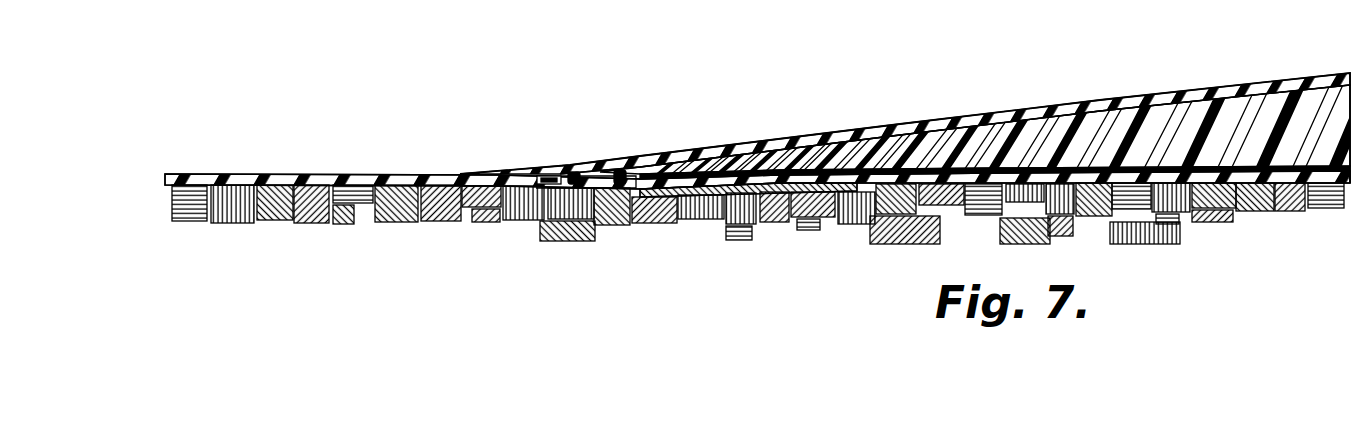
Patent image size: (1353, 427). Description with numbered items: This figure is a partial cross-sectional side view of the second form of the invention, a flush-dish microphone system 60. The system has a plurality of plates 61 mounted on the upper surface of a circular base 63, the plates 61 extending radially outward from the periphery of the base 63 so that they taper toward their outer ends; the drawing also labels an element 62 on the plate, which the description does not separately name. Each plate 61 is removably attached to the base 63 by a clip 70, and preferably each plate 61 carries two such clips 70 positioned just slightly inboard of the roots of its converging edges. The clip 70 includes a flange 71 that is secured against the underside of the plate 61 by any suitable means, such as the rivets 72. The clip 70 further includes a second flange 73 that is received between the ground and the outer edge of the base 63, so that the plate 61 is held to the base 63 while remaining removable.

The flush-dish microphone system 60 is at (906, 102).
The plate 61 is at (878, 130).
The top skin layer 62 is at (1150, 104).
The circular base 63 is at (1338, 176).
The clip 70 is at (628, 189).
The flange 71 is at (547, 174).
The rivet 72 is at (574, 173).
The flange 73 is at (722, 195).